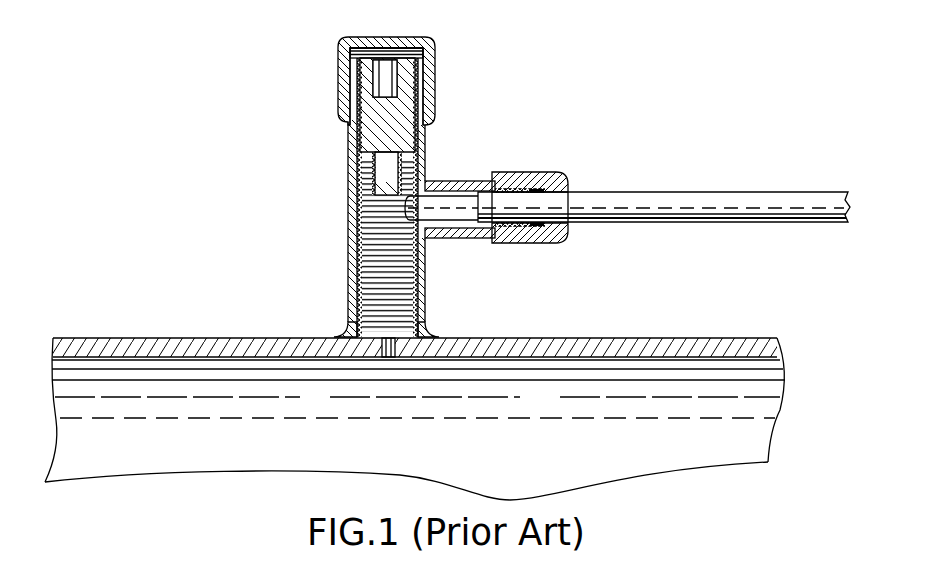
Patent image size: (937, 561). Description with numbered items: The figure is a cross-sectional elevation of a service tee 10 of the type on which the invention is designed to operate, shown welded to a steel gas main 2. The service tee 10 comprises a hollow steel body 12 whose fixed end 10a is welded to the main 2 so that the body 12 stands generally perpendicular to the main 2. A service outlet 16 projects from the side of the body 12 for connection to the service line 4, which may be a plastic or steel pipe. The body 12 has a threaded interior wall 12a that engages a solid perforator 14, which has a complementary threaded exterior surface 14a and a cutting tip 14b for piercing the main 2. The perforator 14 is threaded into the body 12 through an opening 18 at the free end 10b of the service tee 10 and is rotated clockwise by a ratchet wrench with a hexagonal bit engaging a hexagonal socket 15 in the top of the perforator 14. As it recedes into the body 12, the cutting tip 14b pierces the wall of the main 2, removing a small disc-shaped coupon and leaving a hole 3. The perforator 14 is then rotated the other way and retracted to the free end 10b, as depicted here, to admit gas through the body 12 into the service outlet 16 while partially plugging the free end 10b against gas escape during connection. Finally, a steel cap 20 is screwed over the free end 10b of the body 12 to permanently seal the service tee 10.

The steel gas main 2 is at (415, 419).
The hole 3 is at (388, 357).
The service line 4 is at (691, 202).
The service tee 10 is at (417, 170).
The fixed end 10a is at (428, 320).
The free end 10b is at (365, 64).
The hollow steel body 12 is at (346, 229).
The threaded interior wall 12a is at (405, 277).
The solid perforator 14 is at (370, 129).
The threaded exterior surface 14a is at (360, 96).
The cutting tip 14b is at (365, 172).
The hexagonal socket 15 is at (396, 85).
The service outlet 16 is at (462, 183).
The opening 18 is at (392, 44).
The steel cap 20 is at (343, 53).